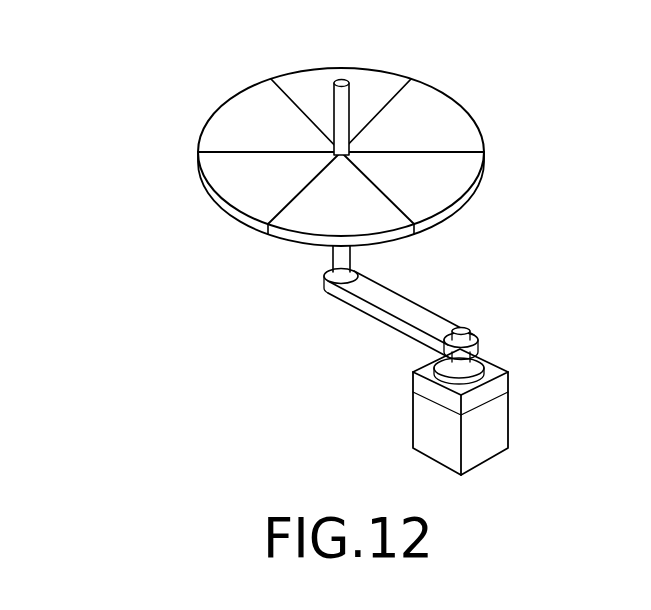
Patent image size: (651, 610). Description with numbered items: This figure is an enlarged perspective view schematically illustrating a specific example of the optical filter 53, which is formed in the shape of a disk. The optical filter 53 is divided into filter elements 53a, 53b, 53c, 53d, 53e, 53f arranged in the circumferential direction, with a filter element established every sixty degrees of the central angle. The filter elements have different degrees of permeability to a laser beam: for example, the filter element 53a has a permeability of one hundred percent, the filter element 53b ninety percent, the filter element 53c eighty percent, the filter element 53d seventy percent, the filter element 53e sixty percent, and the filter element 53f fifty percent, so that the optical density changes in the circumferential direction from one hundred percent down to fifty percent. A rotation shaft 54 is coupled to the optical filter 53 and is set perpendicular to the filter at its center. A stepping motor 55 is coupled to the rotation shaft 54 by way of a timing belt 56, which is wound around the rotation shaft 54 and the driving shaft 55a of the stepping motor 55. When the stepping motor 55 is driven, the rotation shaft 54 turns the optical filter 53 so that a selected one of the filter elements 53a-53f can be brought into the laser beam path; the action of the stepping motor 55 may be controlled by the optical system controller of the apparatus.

The optical filter 53 is at (288, 153).
The filter element 53a is at (213, 178).
The filter element 53b is at (310, 226).
The filter element 53c is at (462, 184).
The filter element 53d is at (452, 107).
The filter element 53e is at (322, 77).
The filter element 53f is at (230, 107).
The rotation shaft 54 is at (353, 108).
The stepping motor 55 is at (495, 425).
The driving shaft 55a is at (463, 333).
The timing belt 56 is at (370, 323).